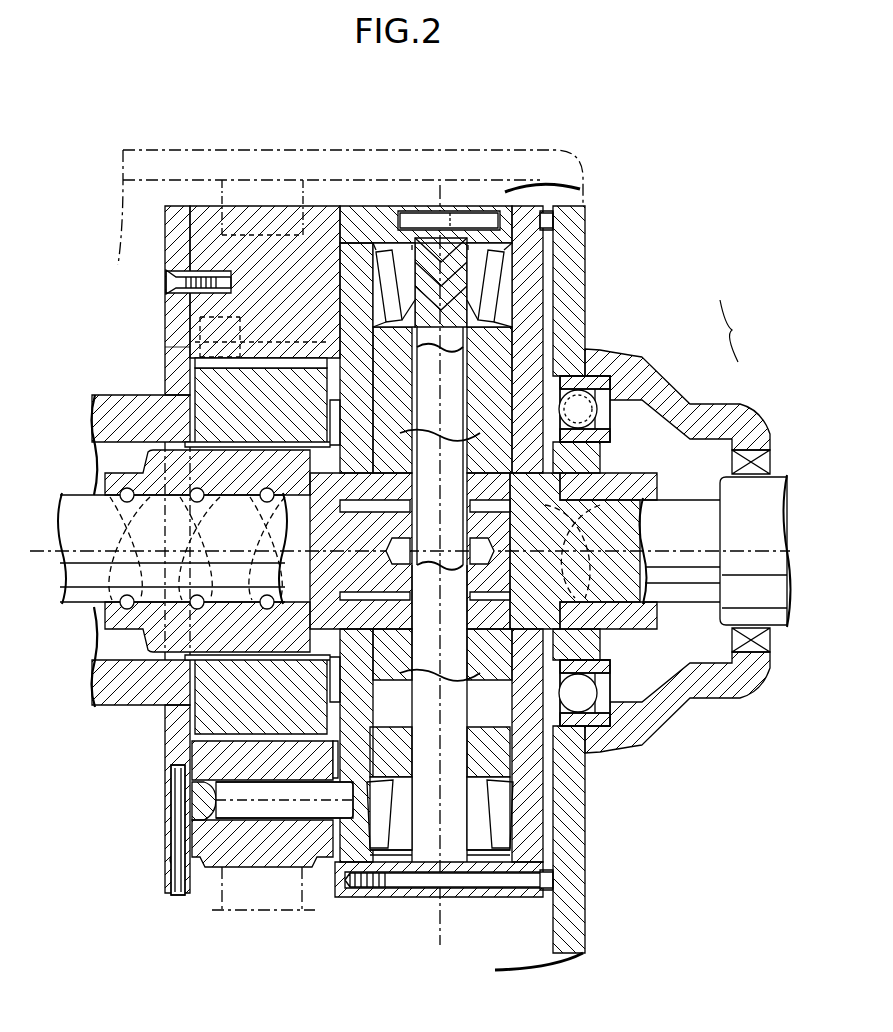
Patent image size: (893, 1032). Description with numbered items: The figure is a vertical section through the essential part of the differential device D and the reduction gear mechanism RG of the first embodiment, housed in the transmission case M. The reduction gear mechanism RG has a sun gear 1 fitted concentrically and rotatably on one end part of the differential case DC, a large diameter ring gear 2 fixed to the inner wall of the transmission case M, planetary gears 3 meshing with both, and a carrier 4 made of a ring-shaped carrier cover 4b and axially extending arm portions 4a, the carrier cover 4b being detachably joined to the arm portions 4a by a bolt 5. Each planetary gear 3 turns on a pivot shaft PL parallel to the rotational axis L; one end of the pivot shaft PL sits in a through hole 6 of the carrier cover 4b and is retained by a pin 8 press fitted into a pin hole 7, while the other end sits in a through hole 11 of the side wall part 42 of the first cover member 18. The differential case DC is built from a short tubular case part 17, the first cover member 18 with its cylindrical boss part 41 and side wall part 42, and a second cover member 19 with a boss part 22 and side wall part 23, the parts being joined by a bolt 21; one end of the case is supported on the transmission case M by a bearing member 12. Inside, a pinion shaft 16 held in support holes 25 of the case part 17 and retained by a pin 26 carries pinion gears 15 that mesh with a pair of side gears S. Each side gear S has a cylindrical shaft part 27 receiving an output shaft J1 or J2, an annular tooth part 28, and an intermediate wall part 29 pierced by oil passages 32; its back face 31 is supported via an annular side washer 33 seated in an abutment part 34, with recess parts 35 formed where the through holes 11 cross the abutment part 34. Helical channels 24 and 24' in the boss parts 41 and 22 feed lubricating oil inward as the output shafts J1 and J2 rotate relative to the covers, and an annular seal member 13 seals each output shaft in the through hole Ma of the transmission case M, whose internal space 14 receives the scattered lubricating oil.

The sun gear 1 is at (270, 703).
The ring gear 2 is at (250, 903).
The planetary gear 3 is at (170, 312).
The carrier 4 is at (209, 504).
The arm portion 4a is at (245, 255).
The carrier cover 4b is at (170, 243).
The bolt 5 is at (166, 282).
The through hole 6 is at (165, 790).
The pin hole 7 is at (365, 592).
The pin 8 is at (177, 895).
The through hole 11 is at (380, 795).
The bearing member 12 is at (588, 703).
The seal member 13 is at (740, 640).
The internal space 14 is at (447, 594).
The pinion gear 15 is at (390, 265).
The pinion shaft 16 is at (440, 550).
The case part 17 is at (393, 880).
The first cover member 18 is at (197, 574).
The second cover member 19 is at (619, 424).
The bolt 21 is at (548, 225).
The boss part 22 is at (592, 450).
The side wall part 23 is at (590, 420).
The helical channel 24 is at (207, 551).
The helical channel 24' is at (583, 551).
The support hole 25 is at (425, 212).
The pin 26 is at (451, 222).
The shaft part 27 is at (700, 440).
The tooth part 28 is at (590, 328).
The intermediate wall part 29 is at (590, 350).
The back face 31 is at (592, 645).
The oil passage 32 is at (440, 432).
The side washer 33 is at (380, 292).
The abutment part 34 is at (360, 325).
The recess part 35 is at (375, 745).
The boss part 41 is at (162, 688).
The side wall part 42 is at (245, 738).
The differential case DC is at (511, 204).
The pivot shaft PL is at (172, 345).
The reduction gear mechanism RG is at (148, 834).
The output shaft J1 is at (146, 560).
The output shaft J2 is at (696, 560).
The rotational axis L is at (755, 545).
The transmission case M is at (661, 579).
The through hole Ma is at (770, 652).
The side gear S is at (462, 818).
The differential device D is at (466, 918).